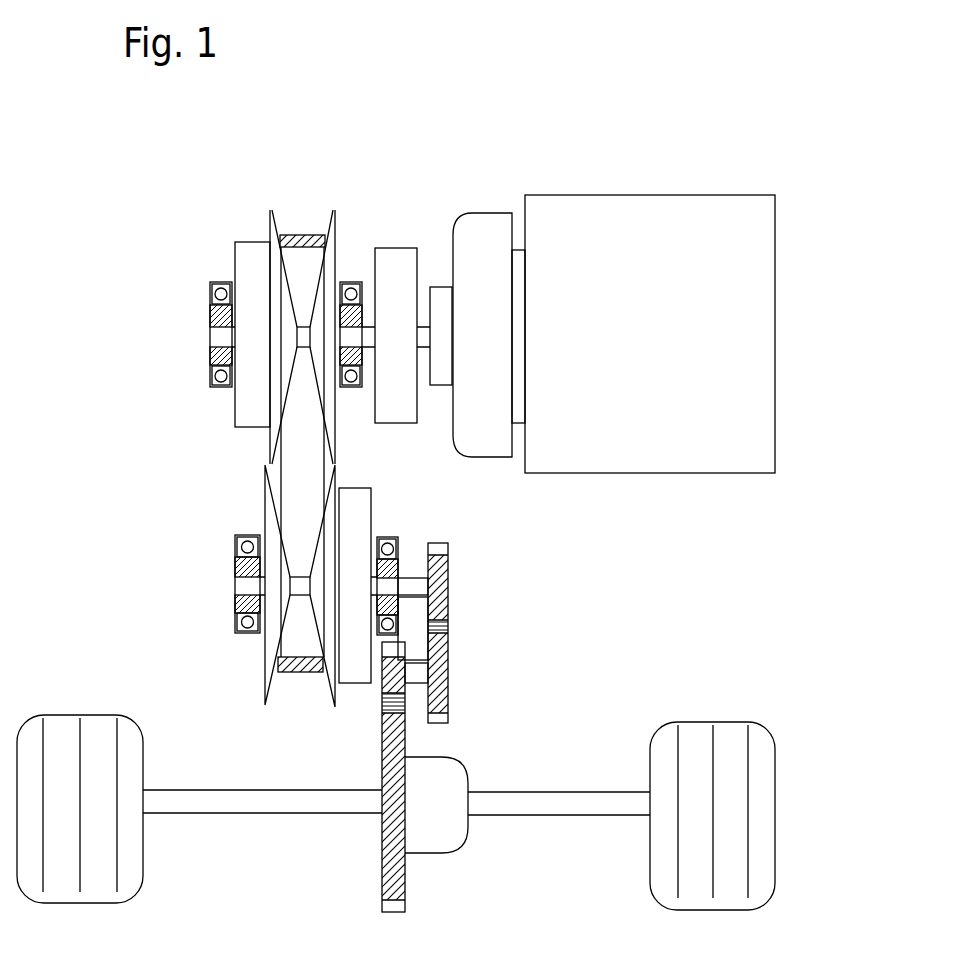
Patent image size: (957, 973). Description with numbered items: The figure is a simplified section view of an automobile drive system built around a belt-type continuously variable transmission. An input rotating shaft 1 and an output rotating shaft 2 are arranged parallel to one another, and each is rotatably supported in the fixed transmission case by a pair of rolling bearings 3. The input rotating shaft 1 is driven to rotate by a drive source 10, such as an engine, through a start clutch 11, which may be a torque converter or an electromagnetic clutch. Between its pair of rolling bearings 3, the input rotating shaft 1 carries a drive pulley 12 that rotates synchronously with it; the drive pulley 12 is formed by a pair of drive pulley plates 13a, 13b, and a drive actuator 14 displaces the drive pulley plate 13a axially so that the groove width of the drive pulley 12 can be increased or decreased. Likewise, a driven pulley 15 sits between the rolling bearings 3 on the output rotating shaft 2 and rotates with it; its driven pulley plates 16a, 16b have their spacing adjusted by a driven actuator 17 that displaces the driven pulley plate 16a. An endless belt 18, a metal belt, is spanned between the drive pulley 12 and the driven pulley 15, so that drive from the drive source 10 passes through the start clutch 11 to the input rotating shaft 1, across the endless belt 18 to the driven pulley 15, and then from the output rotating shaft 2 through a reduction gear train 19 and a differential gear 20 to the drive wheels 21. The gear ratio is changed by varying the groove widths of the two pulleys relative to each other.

The input rotating shaft 1 is at (223, 335).
The output rotating shaft 2 is at (235, 583).
The rolling bearings 3 is at (222, 282).
The drive source 10 is at (703, 300).
The start clutch 11 is at (400, 253).
The drive pulley 12 is at (285, 357).
The drive pulley plate 13a is at (275, 282).
The drive pulley plate 13b is at (333, 267).
The drive actuator 14 is at (257, 313).
The driven pulley 15 is at (270, 510).
The driven pulley plate 16a is at (328, 647).
The driven pulley plate 16b is at (270, 638).
The driven actuator 17 is at (360, 500).
The endless belt 18 is at (288, 668).
The reduction gear train 19 is at (438, 670).
The differential gear 20 is at (392, 732).
The drive wheel 21 is at (67, 870).